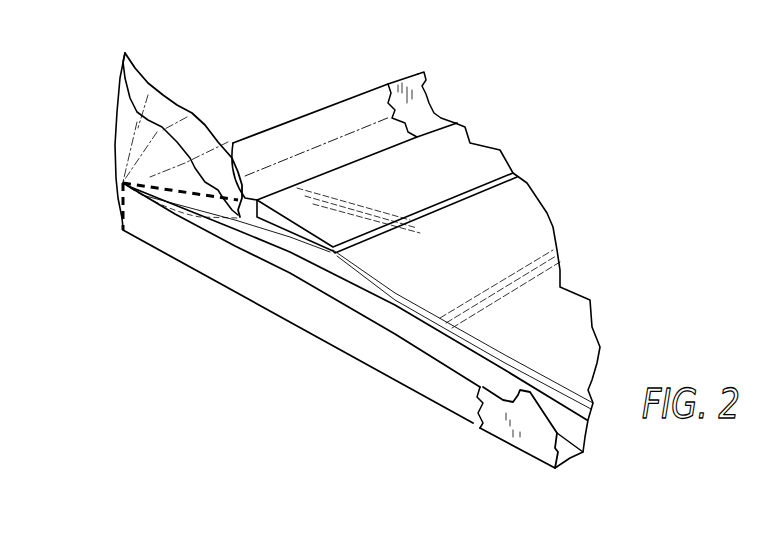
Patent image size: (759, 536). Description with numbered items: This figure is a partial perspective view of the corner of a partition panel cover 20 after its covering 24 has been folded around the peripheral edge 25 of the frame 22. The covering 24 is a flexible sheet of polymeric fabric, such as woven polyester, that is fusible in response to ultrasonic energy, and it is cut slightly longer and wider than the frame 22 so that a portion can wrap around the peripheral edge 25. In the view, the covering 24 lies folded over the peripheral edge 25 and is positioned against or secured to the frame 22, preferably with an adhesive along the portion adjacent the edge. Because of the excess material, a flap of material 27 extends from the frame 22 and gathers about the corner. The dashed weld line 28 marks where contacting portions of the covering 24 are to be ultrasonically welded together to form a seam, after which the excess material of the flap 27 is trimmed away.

The partition panel cover 20 is at (533, 138).
The frame 22 is at (517, 228).
The covering 24 is at (297, 118).
The peripheral edge 25 is at (430, 82).
The flap of material 27 is at (177, 107).
The weld line 28 is at (120, 210).